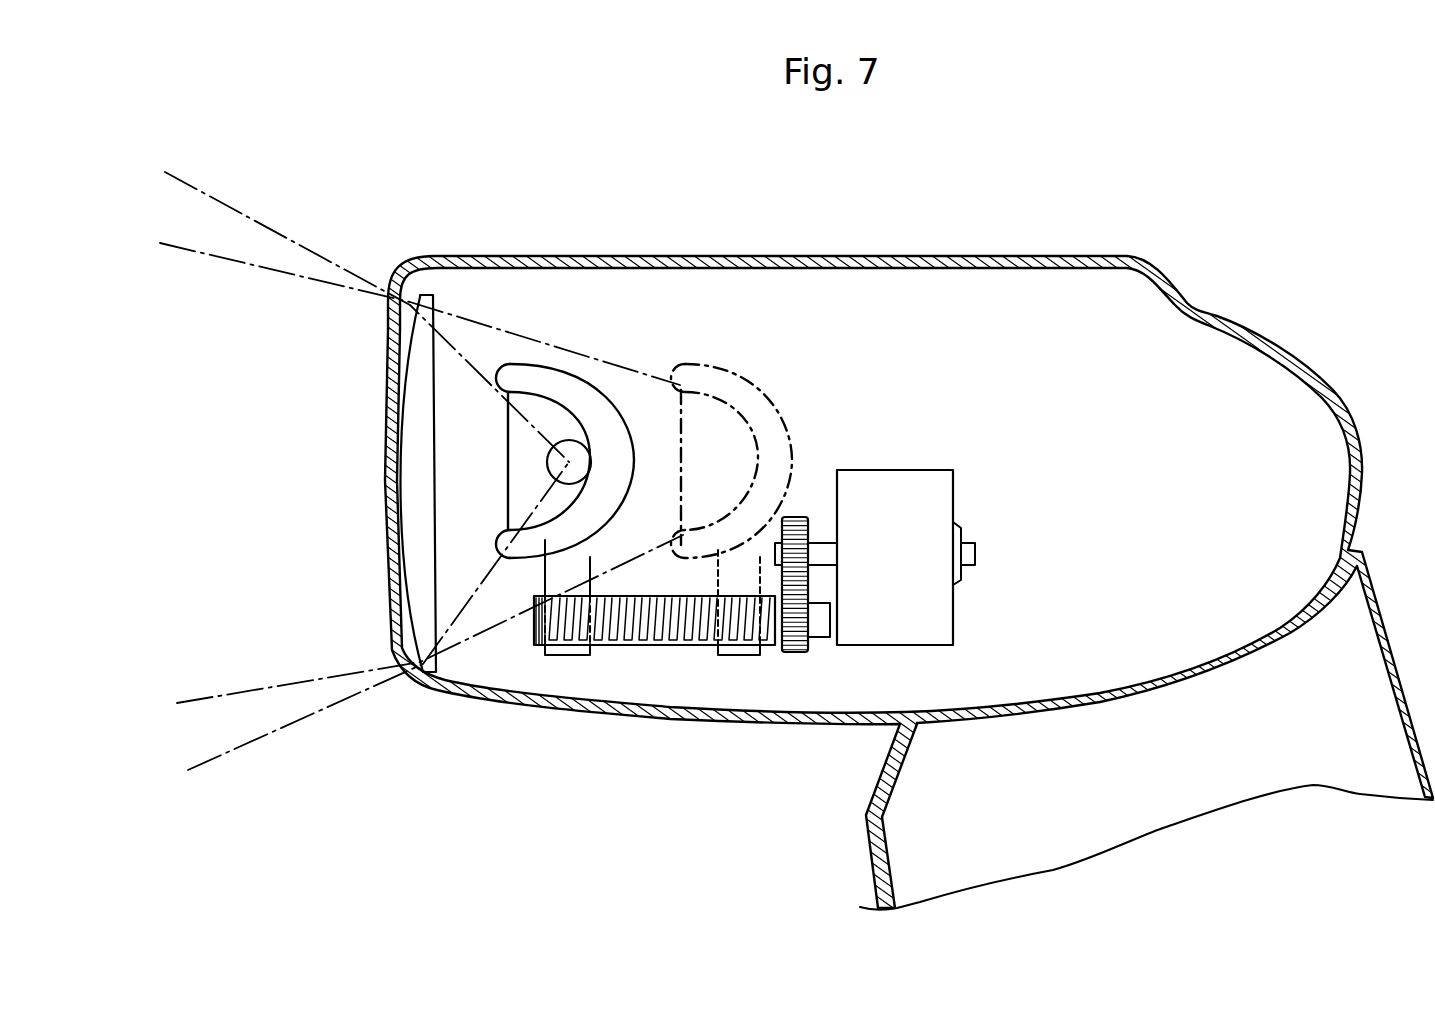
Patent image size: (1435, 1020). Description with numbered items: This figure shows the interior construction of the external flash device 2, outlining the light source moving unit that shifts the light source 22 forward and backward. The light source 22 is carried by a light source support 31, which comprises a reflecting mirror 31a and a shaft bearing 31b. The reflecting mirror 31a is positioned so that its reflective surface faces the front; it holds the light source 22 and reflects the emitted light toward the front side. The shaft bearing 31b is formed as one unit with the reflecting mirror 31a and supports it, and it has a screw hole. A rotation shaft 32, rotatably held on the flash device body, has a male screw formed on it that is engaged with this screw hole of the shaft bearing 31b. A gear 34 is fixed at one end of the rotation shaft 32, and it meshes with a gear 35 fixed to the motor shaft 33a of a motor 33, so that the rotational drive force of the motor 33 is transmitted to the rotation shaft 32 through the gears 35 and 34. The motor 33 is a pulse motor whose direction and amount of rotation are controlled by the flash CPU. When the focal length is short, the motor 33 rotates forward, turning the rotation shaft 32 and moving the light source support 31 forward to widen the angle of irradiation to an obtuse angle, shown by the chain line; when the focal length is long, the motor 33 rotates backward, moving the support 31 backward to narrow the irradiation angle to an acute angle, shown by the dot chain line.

The external flash device 2 is at (1192, 274).
The light source 22 is at (562, 457).
The light source support 31 is at (644, 394).
The reflecting mirror 31a is at (553, 375).
The shaft bearing 31b is at (626, 397).
The rotation shaft 32 is at (637, 646).
The motor 33 is at (920, 470).
The motor shaft 33a is at (823, 541).
The gear 34 is at (798, 654).
The gear 35 is at (798, 516).